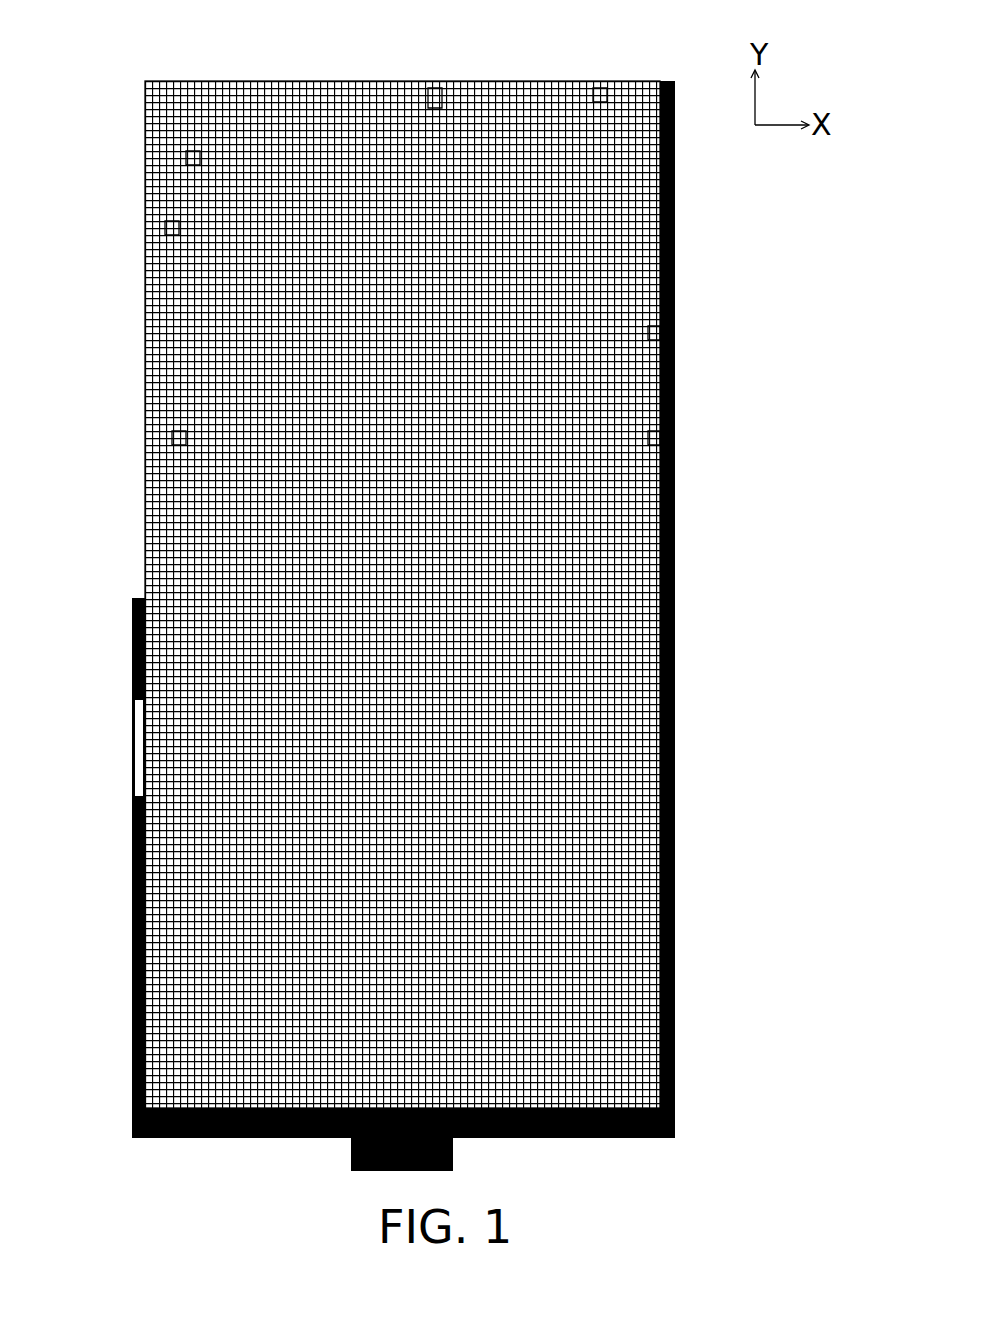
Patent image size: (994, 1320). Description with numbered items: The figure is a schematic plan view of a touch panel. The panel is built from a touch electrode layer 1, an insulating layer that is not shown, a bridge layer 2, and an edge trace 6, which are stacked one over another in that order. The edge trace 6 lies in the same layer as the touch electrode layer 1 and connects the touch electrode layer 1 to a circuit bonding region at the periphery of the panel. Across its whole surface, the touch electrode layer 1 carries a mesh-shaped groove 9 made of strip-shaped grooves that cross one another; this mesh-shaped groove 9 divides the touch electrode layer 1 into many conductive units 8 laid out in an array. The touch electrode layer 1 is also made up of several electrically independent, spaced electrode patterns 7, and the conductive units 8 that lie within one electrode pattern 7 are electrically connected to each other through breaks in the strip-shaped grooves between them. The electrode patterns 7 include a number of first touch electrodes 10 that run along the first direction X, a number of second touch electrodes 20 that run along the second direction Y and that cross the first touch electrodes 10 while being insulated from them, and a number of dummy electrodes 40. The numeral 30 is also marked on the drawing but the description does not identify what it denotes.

The touch electrode layer 1 is at (165, 330).
The bridge layer 2 is at (175, 430).
The edge trace 6 is at (123, 642).
The electrode pattern 7 is at (427, 110).
The conductive unit 8 is at (190, 151).
The mesh-shaped groove 9 is at (170, 222).
The first touch electrode 10 is at (668, 230).
The second touch electrode 20 is at (590, 85).
The connecting line 30 is at (668, 432).
The dummy electrode 40 is at (668, 330).